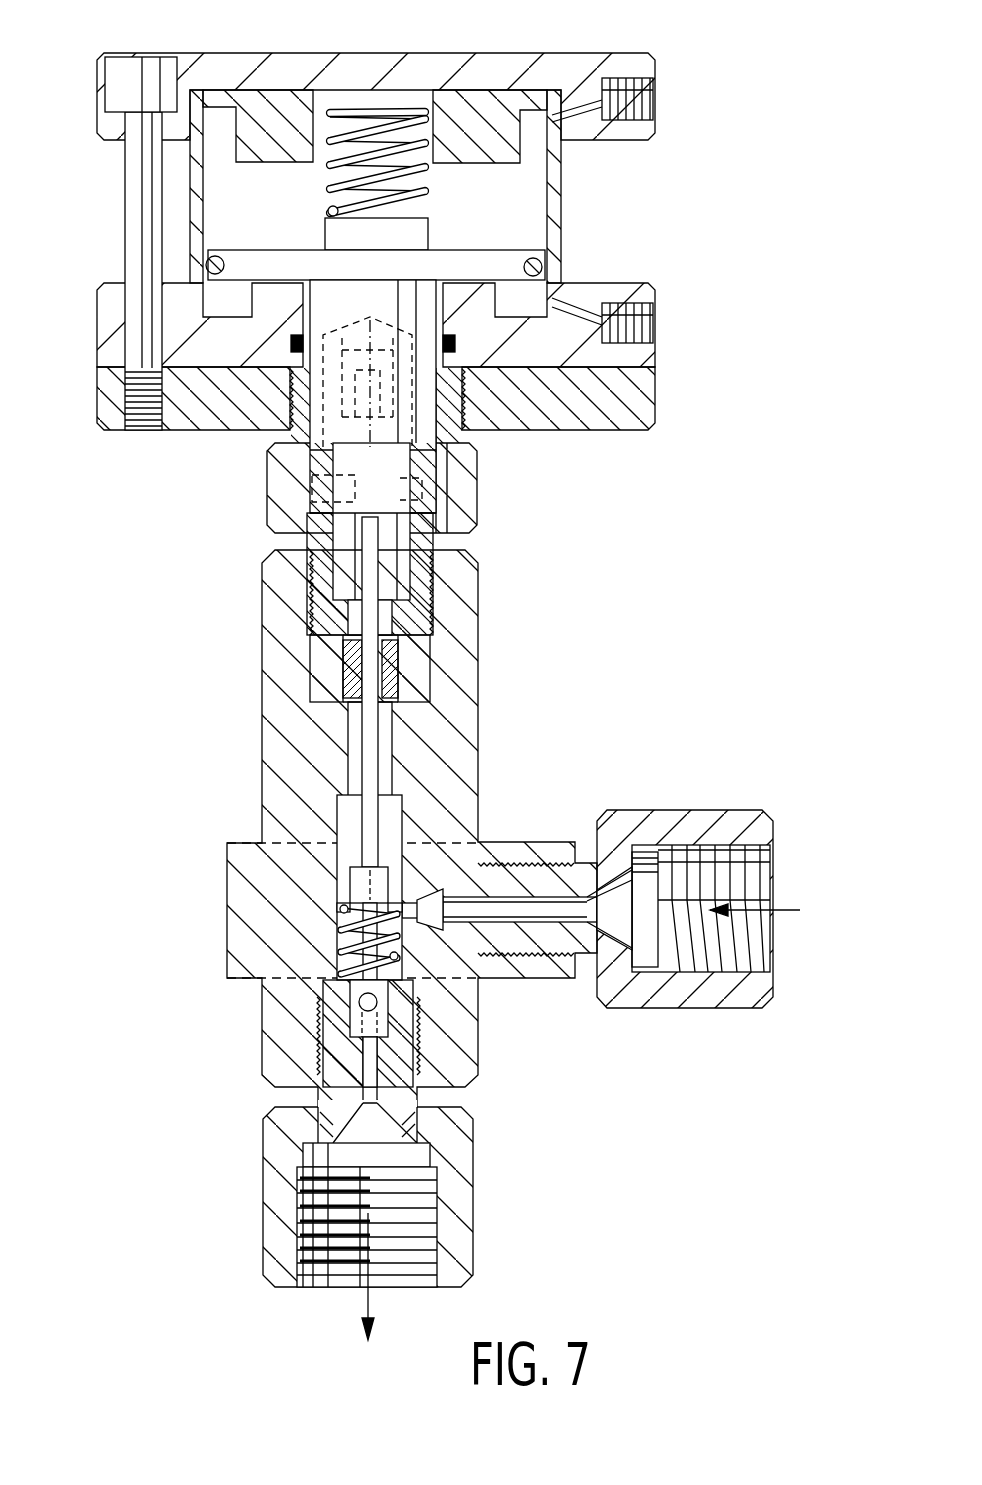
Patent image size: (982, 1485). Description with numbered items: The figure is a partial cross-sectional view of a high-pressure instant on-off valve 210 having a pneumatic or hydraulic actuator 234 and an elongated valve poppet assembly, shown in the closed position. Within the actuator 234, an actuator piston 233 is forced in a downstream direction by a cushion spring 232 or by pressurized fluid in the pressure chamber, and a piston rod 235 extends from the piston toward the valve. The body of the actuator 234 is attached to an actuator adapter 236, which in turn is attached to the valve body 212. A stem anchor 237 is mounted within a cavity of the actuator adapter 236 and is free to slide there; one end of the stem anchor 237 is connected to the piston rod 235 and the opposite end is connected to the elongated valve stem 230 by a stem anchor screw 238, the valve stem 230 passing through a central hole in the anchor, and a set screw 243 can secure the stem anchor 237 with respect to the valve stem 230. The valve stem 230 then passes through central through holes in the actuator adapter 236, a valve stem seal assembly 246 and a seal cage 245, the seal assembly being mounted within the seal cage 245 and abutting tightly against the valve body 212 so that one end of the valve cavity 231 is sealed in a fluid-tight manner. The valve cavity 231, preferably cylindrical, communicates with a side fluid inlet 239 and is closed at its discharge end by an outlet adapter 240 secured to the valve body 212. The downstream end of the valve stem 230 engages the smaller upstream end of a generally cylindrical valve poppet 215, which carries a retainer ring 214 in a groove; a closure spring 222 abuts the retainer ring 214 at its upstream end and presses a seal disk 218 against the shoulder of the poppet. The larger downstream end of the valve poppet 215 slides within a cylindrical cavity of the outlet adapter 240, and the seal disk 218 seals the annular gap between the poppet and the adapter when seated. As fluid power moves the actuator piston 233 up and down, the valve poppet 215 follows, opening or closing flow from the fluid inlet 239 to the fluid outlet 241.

The instant on-off valve 210 is at (170, 47).
The actuator 234 is at (560, 46).
The cushion spring 232 is at (326, 187).
The actuator piston 233 is at (278, 219).
The piston rod 235 is at (383, 292).
The stem anchor screw 238 is at (463, 432).
The actuator adapter 236 is at (280, 458).
The stem anchor 237 is at (436, 462).
The set screw 243 is at (265, 487).
The valve stem seal assembly 246 is at (390, 665).
The seal cage 245 is at (417, 690).
The valve body 212 is at (278, 733).
The valve stem 230 is at (368, 762).
The valve cavity 231 is at (388, 835).
The valve poppet 215 is at (350, 876).
The retainer ring 214 is at (360, 888).
The closure spring 222 is at (347, 922).
The seal disk 218 is at (302, 981).
The fluid inlet 239 is at (763, 890).
The fluid outlet 241 is at (372, 1070).
The outlet adapter 240 is at (277, 1213).